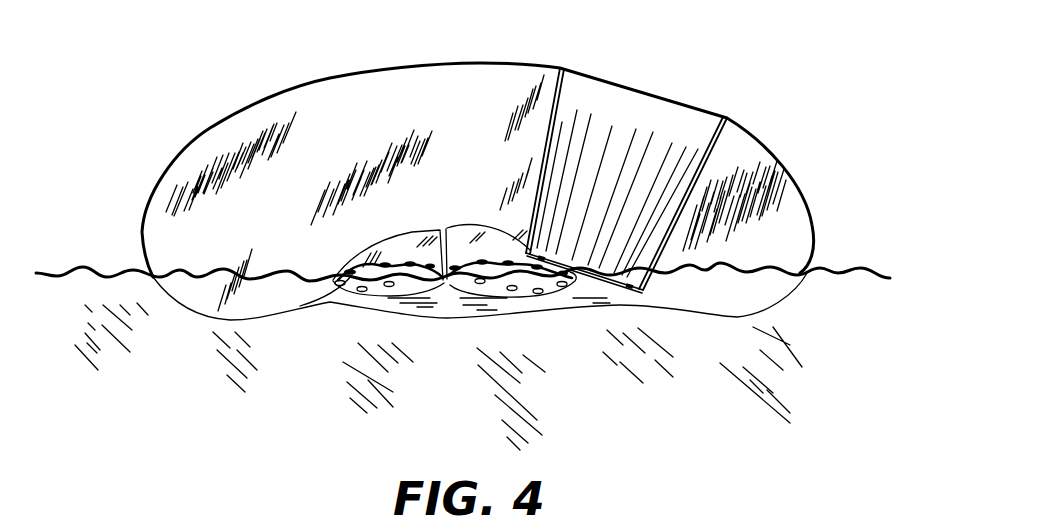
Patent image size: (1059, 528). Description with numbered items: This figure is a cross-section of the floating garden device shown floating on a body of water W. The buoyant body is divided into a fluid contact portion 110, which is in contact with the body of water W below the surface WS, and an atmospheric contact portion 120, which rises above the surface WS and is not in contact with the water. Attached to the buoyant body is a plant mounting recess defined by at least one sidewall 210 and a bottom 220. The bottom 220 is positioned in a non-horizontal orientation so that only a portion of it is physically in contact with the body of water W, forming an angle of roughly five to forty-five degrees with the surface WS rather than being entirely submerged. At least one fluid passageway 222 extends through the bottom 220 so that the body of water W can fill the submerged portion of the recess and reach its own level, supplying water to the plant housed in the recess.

The fluid contact portion 110 is at (813, 318).
The atmospheric contact portion 120 is at (810, 274).
The sidewall 210 is at (560, 90).
The bottom 220 is at (652, 150).
The fluid passageway 222 is at (590, 272).
The surface WS is at (107, 273).
The body of water W is at (318, 413).